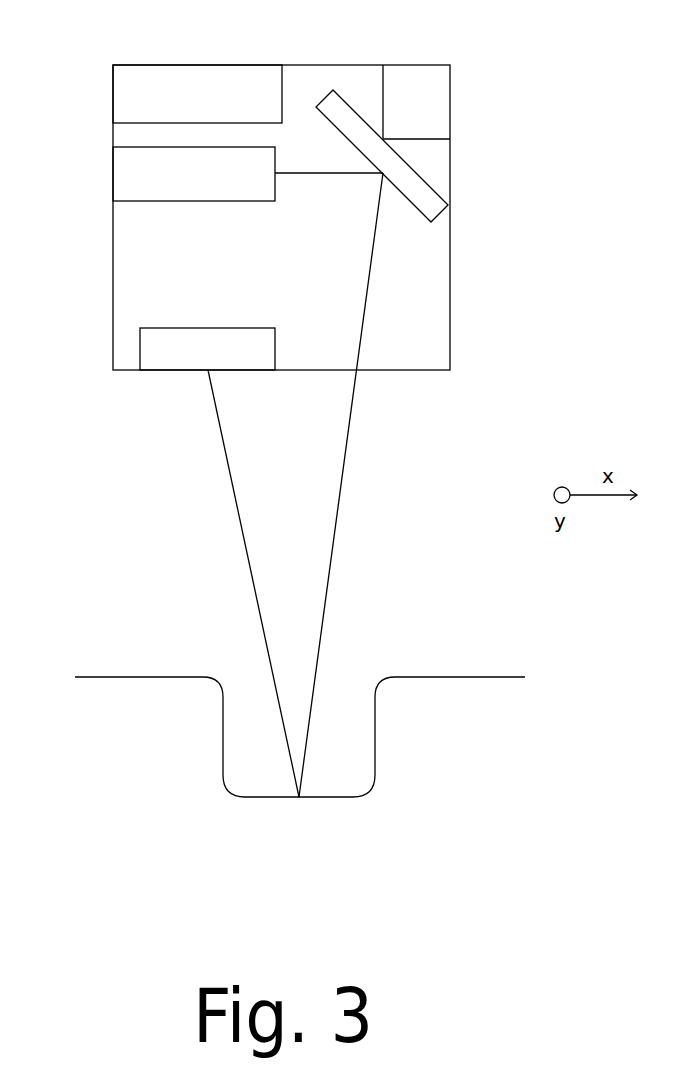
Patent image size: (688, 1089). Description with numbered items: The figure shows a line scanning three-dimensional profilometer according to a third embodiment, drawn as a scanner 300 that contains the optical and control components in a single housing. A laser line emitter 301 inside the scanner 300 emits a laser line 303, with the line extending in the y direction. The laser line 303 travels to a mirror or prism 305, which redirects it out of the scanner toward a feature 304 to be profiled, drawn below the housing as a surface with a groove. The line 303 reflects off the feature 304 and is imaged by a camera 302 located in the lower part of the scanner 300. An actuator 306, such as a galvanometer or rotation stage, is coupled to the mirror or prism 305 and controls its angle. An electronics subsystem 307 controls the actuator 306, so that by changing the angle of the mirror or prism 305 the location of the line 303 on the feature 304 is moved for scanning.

The scanner 300 is at (300, 267).
The laser line emitter 301 is at (113, 172).
The camera 302 is at (208, 327).
The laser line 303 is at (344, 465).
The feature 304 is at (208, 672).
The mirror or prism 305 is at (438, 214).
The actuator 306 is at (450, 103).
The electronics subsystem 307 is at (208, 98).